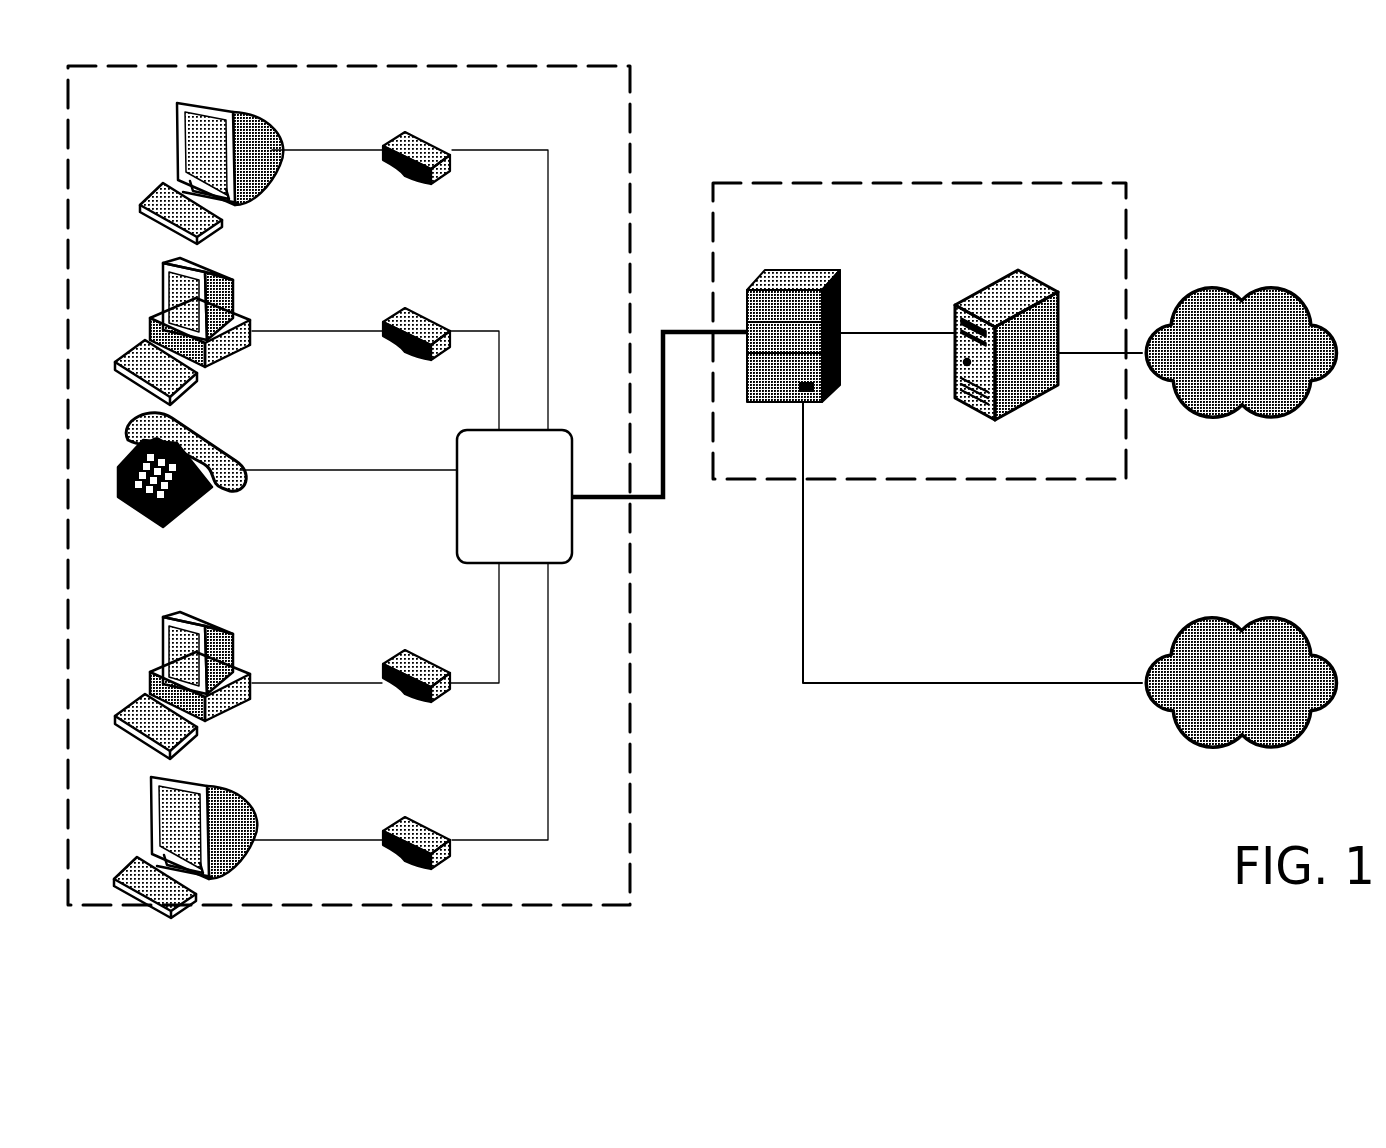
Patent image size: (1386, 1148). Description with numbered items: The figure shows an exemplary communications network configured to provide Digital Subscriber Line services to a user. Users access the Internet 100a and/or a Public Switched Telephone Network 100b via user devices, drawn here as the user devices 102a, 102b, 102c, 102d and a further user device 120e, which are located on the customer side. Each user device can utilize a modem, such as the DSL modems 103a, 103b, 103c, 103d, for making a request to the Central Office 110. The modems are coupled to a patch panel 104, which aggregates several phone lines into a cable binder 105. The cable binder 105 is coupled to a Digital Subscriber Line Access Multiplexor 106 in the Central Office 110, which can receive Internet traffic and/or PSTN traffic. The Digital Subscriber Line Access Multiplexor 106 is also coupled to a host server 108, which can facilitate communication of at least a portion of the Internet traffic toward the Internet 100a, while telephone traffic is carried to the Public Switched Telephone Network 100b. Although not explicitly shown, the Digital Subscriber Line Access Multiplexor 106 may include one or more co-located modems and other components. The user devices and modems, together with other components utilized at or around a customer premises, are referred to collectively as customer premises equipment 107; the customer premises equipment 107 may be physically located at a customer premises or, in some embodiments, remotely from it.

The Internet 100a is at (1215, 288).
The Public Switched Telephone Network 100b is at (1215, 618).
The user device 102a is at (268, 133).
The user device 102b is at (233, 283).
The user device 102c is at (213, 442).
The user device 102d is at (233, 637).
The computer (customer premises equipment) 120e is at (242, 803).
The DSL modem 103a is at (405, 132).
The DSL modem 103b is at (405, 308).
The DSL modem 103c is at (405, 650).
The DSL modem 103d is at (405, 817).
The patch panel 104 is at (578, 426).
The cable binder 105 is at (665, 468).
The Digital Subscriber Line Access Multiplexor 106 is at (848, 270).
The customer premises equipment 107 is at (600, 103).
The host server 108 is at (1002, 270).
The Central Office 110 is at (915, 219).